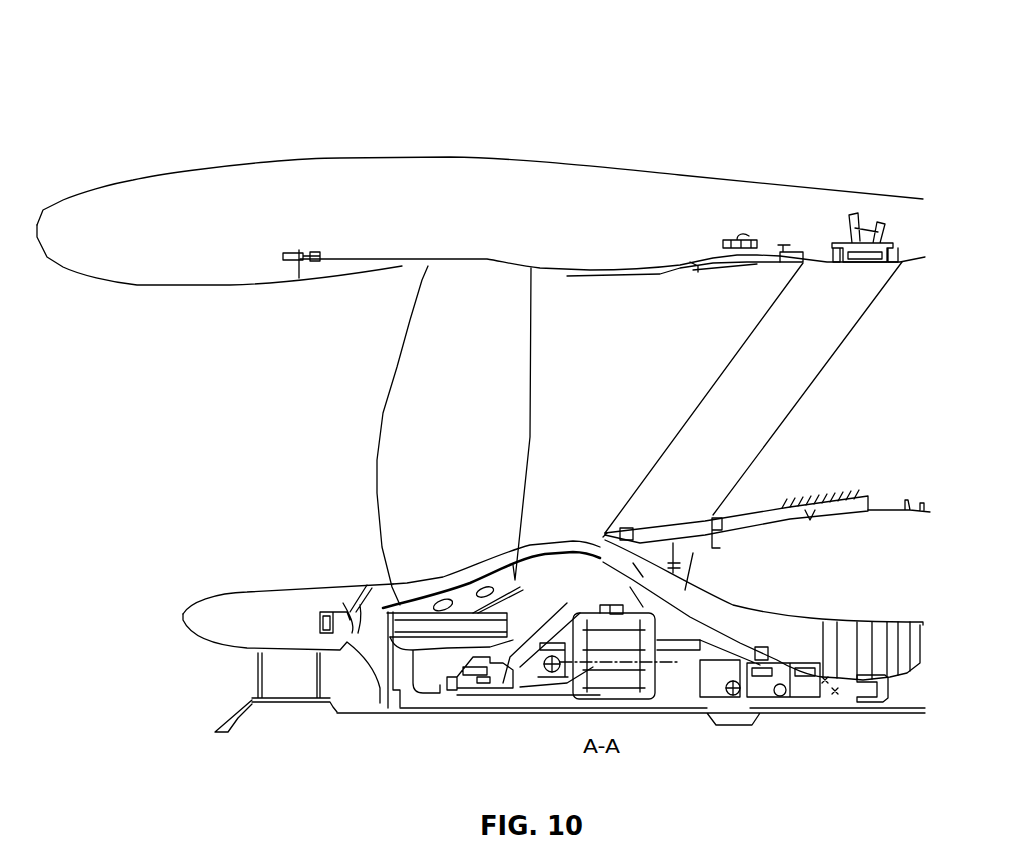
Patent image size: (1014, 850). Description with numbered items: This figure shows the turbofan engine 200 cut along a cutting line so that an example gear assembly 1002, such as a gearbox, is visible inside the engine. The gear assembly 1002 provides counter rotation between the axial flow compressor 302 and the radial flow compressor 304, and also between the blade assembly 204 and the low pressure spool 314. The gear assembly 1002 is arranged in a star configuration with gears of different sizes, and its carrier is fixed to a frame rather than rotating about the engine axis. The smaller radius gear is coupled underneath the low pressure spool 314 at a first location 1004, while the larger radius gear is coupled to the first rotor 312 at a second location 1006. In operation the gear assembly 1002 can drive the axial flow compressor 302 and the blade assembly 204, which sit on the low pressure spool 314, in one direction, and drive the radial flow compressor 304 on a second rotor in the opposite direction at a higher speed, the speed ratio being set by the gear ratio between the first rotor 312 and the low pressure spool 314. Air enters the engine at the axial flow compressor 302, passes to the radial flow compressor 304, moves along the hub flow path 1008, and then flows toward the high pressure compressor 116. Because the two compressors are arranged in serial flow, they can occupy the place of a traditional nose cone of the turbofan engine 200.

The turbofan engine 200 is at (778, 52).
The blade assembly 204 is at (378, 505).
The high pressure compressor 116 is at (885, 642).
The axial flow compressor 302 is at (283, 683).
The radial flow compressor 304 is at (353, 683).
The first rotor 312 is at (416, 632).
The low pressure spool 314 is at (433, 714).
The gear assembly 1002 is at (666, 694).
The first location 1004 is at (743, 700).
The second location 1006 is at (490, 683).
The hub flow path 1008 is at (535, 547).